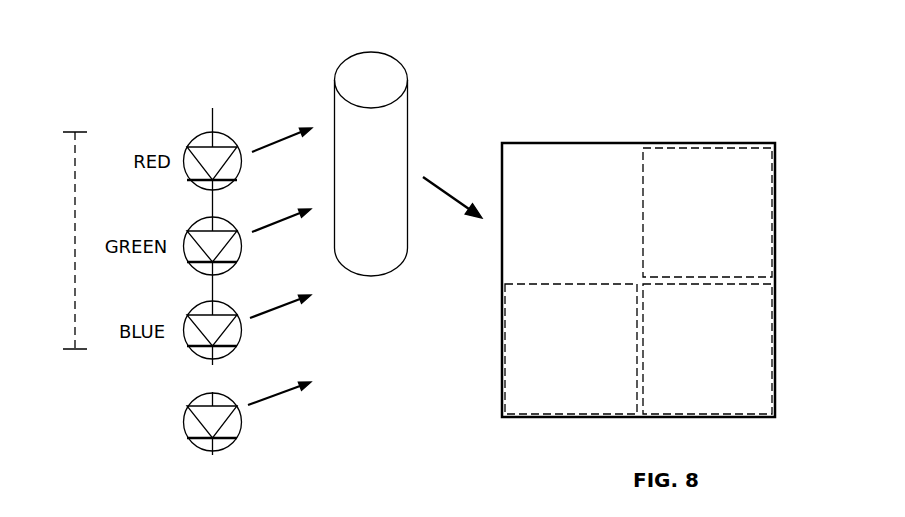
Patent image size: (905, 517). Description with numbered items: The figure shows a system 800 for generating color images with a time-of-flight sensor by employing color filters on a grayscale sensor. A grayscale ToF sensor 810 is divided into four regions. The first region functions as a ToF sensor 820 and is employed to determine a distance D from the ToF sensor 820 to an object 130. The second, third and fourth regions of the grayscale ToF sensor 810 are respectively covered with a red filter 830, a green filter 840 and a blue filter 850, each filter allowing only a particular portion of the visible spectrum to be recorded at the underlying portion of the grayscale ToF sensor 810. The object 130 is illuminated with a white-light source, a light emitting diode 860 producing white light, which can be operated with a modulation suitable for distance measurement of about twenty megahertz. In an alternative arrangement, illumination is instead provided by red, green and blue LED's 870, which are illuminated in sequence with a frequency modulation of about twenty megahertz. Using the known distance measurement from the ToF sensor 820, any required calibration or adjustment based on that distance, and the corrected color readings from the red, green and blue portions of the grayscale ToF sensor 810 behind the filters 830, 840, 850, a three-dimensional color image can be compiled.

The object 130 is at (377, 68).
The system 800 is at (636, 250).
The grayscale ToF sensor 810 is at (565, 143).
The ToF sensor 820 is at (527, 167).
The red filter 830 is at (765, 168).
The green filter 840 is at (548, 408).
The blue filter 850 is at (763, 305).
The light emitting diode (LED) 860 is at (132, 407).
The red, green and blue LED's 870 is at (79, 147).